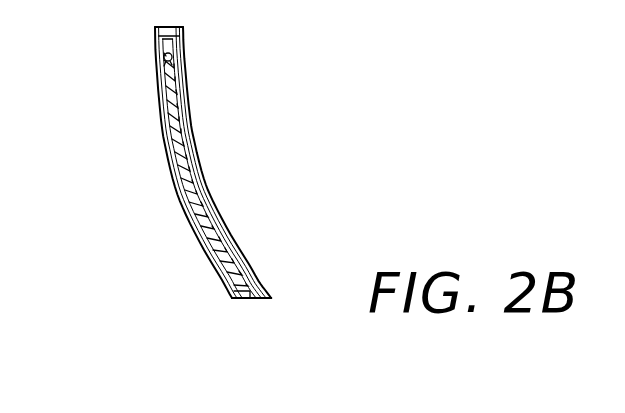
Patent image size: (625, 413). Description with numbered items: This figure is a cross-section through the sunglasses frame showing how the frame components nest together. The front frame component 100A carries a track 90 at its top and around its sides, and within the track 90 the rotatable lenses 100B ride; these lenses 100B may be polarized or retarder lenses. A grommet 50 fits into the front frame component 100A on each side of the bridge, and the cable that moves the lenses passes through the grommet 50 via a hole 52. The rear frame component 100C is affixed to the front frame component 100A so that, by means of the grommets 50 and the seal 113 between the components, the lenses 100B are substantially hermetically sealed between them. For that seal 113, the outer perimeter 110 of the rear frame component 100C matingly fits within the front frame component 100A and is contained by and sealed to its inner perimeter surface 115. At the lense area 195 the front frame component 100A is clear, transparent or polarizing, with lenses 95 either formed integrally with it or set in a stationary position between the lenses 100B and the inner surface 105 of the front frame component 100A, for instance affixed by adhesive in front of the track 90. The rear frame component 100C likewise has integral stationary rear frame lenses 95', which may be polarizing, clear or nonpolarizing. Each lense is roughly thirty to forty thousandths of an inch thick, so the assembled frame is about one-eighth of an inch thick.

The grommet 50 is at (184, 52).
The hole 52 is at (172, 58).
The track 90 is at (228, 291).
The lenses 95 is at (191, 173).
The rear frame lenses 95' is at (217, 168).
The front frame component 100A is at (243, 300).
The lenses 100B is at (234, 246).
The rear frame component 100C is at (190, 115).
The inner surface 105 is at (176, 170).
The outer perimeter 110 is at (258, 299).
The seal 113 is at (240, 300).
The inner perimeter surface 115 is at (262, 300).
The lense area 195 is at (207, 258).